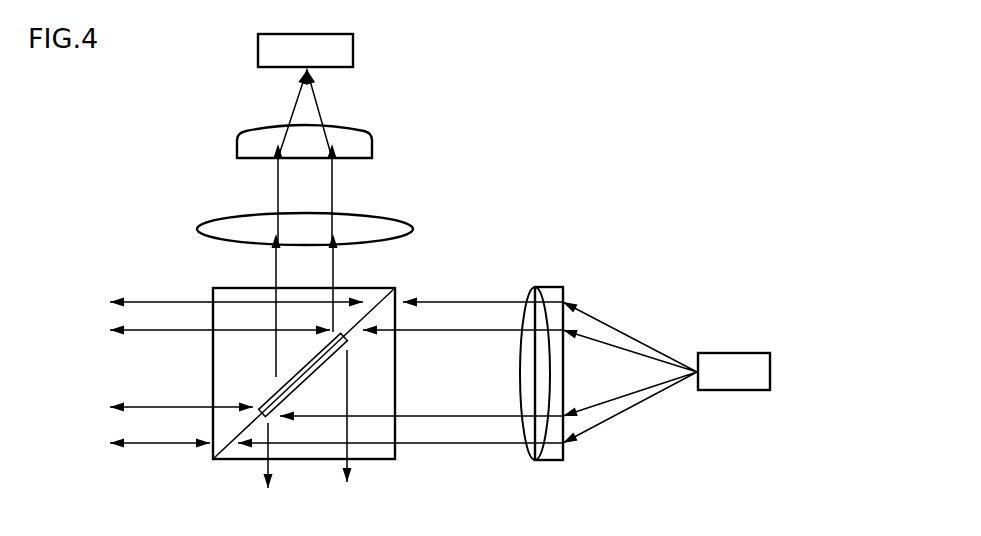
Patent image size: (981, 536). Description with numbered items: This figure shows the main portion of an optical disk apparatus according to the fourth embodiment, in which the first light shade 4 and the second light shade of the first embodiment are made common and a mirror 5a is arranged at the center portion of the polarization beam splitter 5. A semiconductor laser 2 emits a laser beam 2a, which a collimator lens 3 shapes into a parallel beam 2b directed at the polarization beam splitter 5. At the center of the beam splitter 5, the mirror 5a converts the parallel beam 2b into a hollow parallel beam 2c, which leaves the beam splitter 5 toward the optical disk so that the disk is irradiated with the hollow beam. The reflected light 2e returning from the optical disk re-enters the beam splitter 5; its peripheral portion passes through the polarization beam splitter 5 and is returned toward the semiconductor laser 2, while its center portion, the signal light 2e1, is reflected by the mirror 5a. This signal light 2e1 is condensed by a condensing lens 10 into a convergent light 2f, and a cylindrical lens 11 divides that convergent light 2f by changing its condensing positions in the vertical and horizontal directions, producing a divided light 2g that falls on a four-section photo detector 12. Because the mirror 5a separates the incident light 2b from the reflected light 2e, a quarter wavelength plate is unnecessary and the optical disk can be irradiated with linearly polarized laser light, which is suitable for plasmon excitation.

The semiconductor laser 2 is at (737, 390).
The laser beam 2a is at (632, 407).
The parallel beam 2b is at (463, 432).
The hollow parallel beam 2c is at (170, 447).
The reflected light 2e is at (150, 313).
The signal light 2e1 is at (272, 267).
The convergent light 2f is at (275, 185).
The divided light 2g is at (290, 98).
The collimator lens 3 is at (553, 292).
The first light shade 4 is at (475, 322).
The polarization beam splitter 5 is at (387, 462).
The mirror 5a is at (310, 383).
The condensing lens 10 is at (407, 227).
The cylindrical lens 11 is at (370, 142).
The four-section photo detector 12 is at (353, 48).